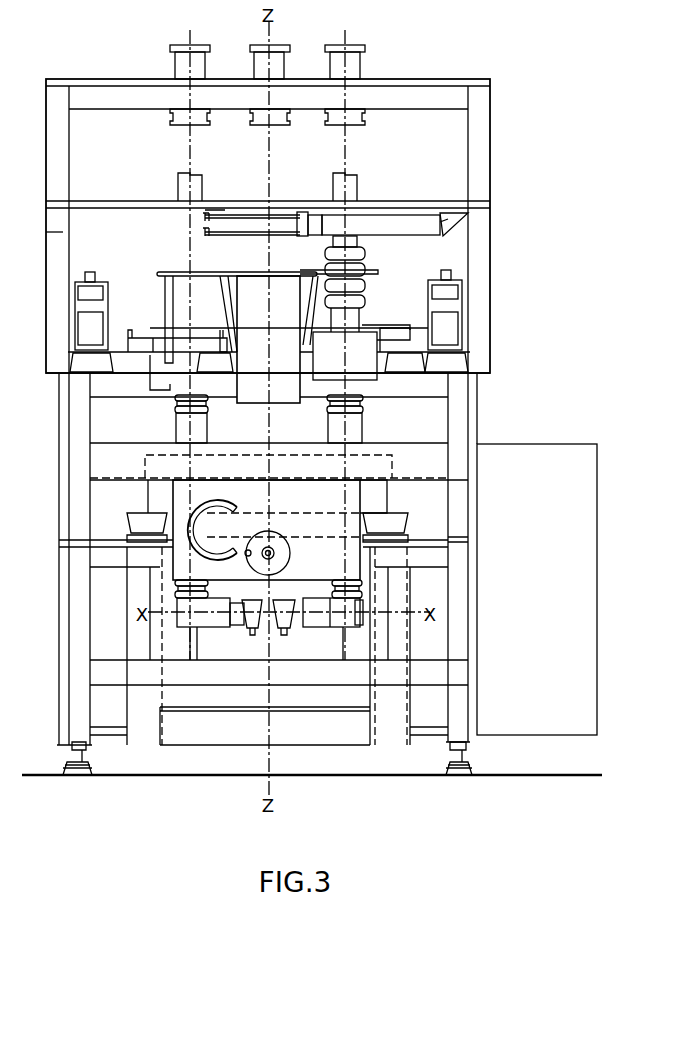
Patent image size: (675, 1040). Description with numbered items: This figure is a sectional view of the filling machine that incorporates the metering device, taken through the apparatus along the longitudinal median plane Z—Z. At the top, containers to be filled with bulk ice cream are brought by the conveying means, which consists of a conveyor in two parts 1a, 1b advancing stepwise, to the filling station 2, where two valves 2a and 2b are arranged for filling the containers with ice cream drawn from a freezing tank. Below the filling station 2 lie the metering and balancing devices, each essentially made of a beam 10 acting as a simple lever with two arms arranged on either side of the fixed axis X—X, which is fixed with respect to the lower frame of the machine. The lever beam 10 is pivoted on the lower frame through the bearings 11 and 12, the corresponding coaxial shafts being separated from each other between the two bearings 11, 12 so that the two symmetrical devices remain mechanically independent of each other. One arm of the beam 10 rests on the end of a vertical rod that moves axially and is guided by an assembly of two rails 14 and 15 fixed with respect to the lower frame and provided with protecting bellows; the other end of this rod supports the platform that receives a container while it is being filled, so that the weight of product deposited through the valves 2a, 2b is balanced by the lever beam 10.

The conveyor part 1a is at (150, 336).
The conveyor part 1b is at (385, 338).
The filling station 2 is at (497, 157).
The valve 2a is at (181, 69).
The valve 2b is at (350, 70).
The beam 10 is at (225, 627).
The bearing 11 is at (173, 620).
The bearing 12 is at (250, 636).
The rail 14 is at (352, 432).
The rail 15 is at (186, 433).